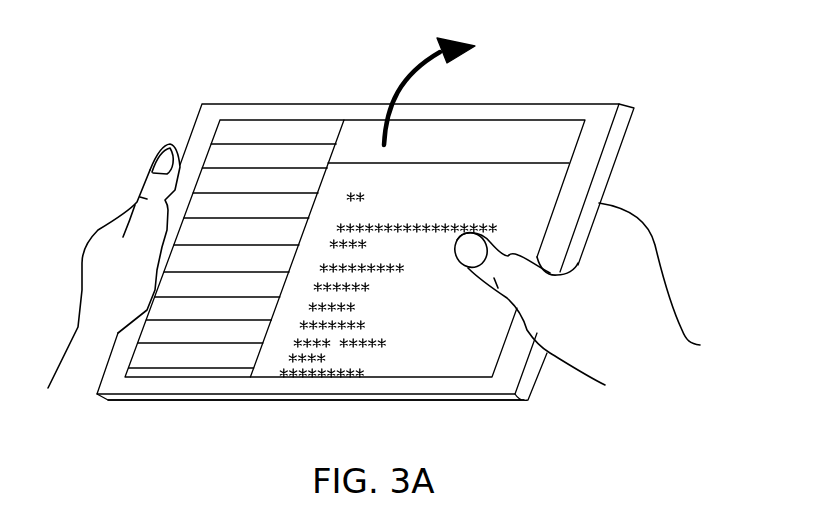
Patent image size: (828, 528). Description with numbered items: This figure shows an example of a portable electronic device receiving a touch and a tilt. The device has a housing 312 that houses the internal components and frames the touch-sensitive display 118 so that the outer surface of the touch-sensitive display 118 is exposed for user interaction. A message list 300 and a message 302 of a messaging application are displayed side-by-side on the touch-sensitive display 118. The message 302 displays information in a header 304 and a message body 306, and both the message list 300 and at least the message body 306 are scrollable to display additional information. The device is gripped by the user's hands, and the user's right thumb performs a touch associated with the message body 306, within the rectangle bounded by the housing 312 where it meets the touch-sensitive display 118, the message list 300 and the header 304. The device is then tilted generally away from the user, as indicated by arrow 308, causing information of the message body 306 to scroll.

The message list 300 is at (242, 140).
The message 302 is at (557, 140).
The header 304 is at (560, 152).
The message body 306 is at (477, 367).
The arrow 308 is at (398, 90).
The housing 312 is at (140, 398).
The touch-sensitive display 118 is at (262, 373).